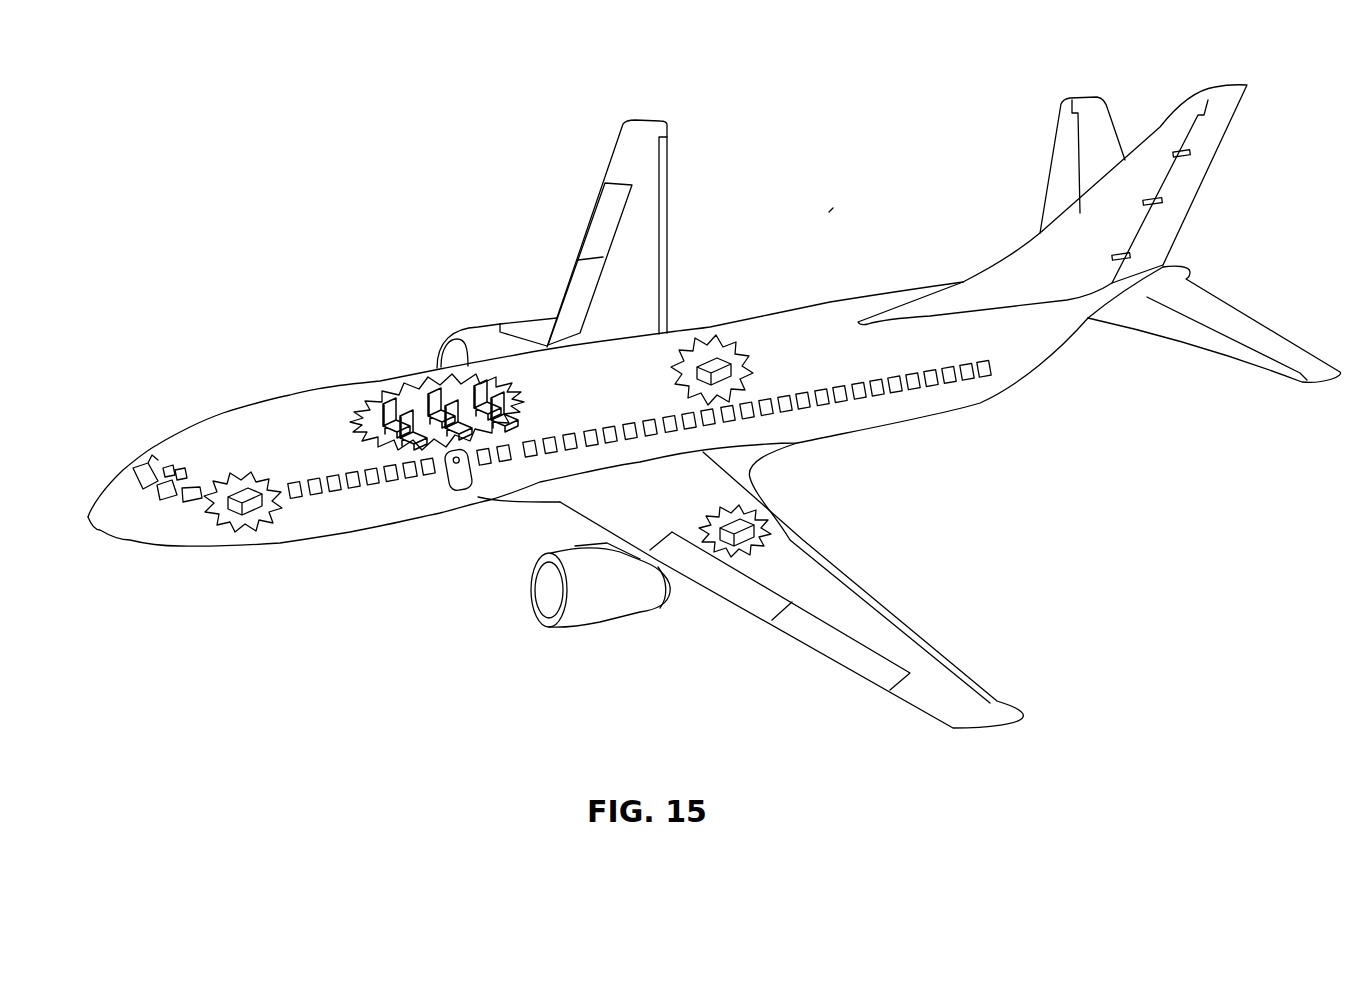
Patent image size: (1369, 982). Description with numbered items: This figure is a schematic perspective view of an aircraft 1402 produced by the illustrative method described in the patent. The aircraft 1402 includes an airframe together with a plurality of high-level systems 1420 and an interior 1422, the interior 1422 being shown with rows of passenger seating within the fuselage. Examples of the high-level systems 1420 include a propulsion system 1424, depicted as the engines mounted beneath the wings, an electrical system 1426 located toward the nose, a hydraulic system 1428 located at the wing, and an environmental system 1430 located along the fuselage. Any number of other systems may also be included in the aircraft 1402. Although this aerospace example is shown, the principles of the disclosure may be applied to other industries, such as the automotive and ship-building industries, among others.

The aircraft 1402 is at (503, 245).
The high-level systems 1420 is at (832, 210).
The interior 1422 is at (400, 440).
The propulsion system 1424 is at (467, 325).
The electrical system 1426 is at (240, 493).
The hydraulic system 1428 is at (757, 525).
The environmental system 1430 is at (718, 362).